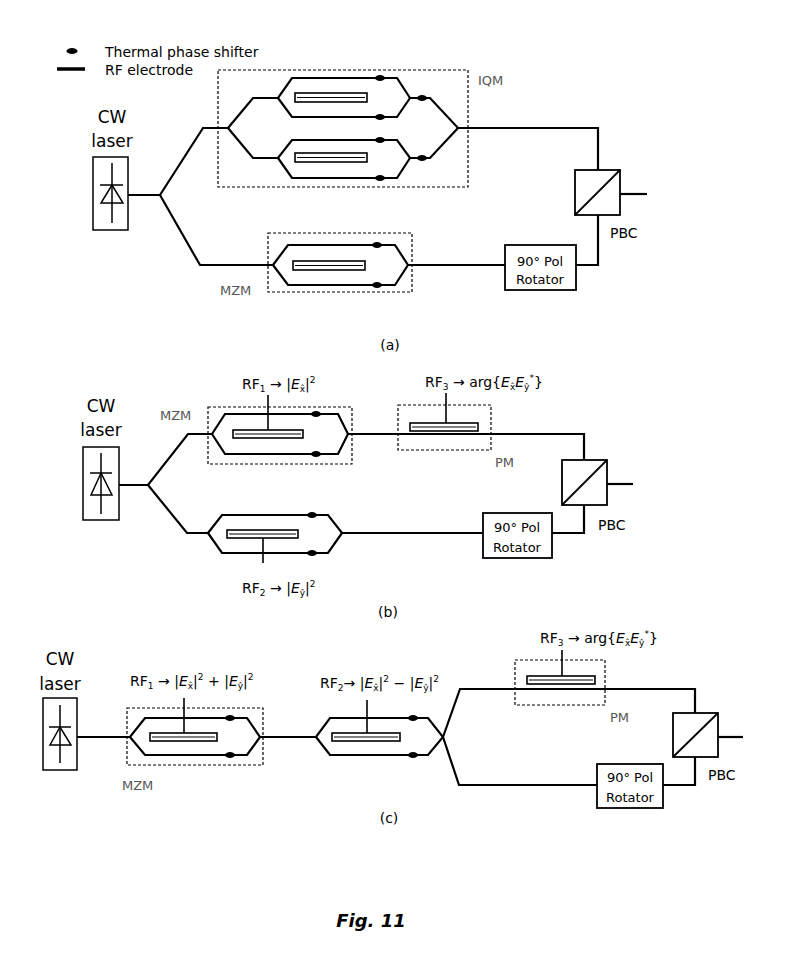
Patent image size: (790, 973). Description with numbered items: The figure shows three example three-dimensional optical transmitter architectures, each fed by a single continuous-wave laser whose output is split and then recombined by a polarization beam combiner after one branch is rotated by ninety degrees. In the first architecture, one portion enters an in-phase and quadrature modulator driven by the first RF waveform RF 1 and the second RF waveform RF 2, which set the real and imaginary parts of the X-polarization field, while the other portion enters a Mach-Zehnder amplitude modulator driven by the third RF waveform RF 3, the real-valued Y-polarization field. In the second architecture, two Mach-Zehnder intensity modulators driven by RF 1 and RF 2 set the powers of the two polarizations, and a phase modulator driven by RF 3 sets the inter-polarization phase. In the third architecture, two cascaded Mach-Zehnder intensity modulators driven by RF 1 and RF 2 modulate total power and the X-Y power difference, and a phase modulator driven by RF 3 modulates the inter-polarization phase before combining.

The first RF driving waveform RF1 1 is at (332, 93).
The second RF driving waveform RF2 2 is at (332, 162).
The third RF driving waveform RF3 3 is at (328, 270).